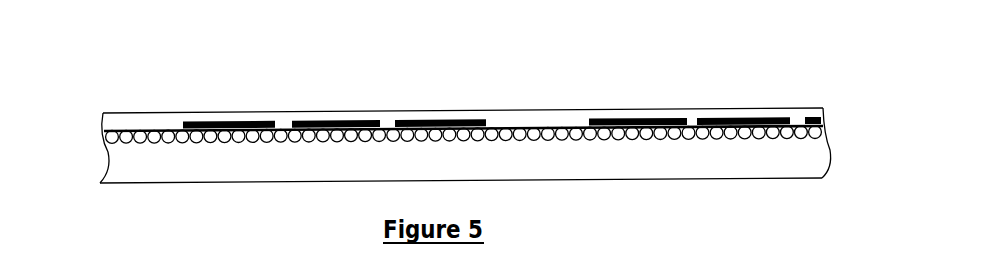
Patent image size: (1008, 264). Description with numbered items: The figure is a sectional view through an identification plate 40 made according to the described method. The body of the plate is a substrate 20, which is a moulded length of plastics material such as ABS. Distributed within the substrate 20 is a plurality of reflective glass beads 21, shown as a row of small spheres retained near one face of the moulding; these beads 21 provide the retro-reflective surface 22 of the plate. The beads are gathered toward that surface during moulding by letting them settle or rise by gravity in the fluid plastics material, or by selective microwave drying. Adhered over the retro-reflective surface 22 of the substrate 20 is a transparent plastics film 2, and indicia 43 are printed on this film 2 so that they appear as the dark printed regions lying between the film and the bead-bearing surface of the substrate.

The transparent plastics film 2 is at (133, 122).
The substrate 20 is at (133, 163).
The reflective glass beads 21 is at (823, 137).
The retro-reflective surface 22 is at (692, 125).
The plate 40 is at (278, 84).
The indicia 43 is at (430, 123).